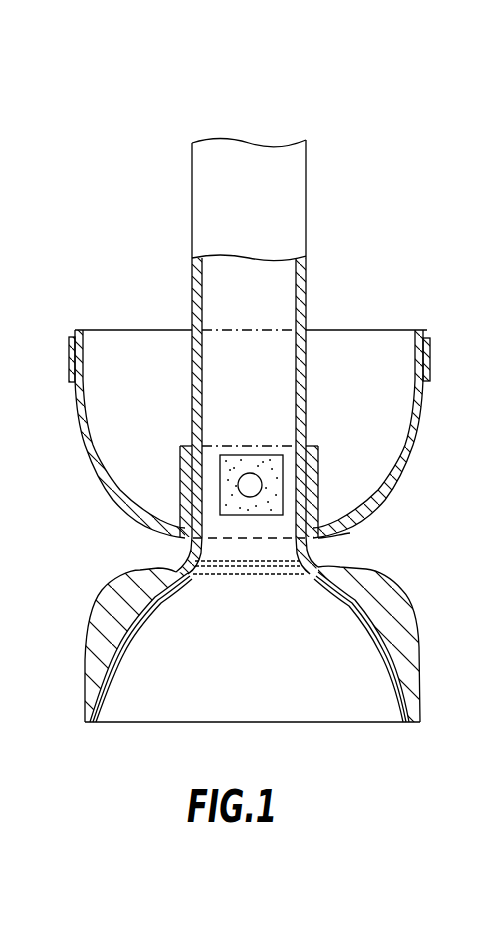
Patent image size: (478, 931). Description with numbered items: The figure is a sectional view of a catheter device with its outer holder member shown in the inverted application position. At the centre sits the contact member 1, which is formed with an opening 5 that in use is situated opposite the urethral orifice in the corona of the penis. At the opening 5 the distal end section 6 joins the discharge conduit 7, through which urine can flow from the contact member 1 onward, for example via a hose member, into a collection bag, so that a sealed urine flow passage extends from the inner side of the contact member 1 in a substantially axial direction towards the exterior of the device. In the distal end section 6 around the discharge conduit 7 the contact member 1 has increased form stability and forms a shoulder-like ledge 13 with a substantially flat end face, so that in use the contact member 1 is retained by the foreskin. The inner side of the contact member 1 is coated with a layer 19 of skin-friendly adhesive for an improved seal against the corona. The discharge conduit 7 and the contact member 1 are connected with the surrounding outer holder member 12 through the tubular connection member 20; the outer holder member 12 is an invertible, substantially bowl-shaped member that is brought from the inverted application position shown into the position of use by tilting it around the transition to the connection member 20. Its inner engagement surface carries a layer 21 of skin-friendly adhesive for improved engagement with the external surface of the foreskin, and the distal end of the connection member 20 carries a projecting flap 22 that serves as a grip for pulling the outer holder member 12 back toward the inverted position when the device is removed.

The contact member 1 is at (386, 598).
The opening 5 is at (245, 564).
The distal end section 6 is at (310, 541).
The discharge conduit 7 is at (192, 175).
The outer holder member 12 is at (393, 456).
The shoulder-like ledge 13 is at (112, 598).
The layer of skin-friendly adhesive 19 is at (120, 645).
The tubular connection member 20 is at (180, 519).
The layer of skin-friendly adhesive 21 is at (70, 352).
The projecting flap 22 is at (296, 330).